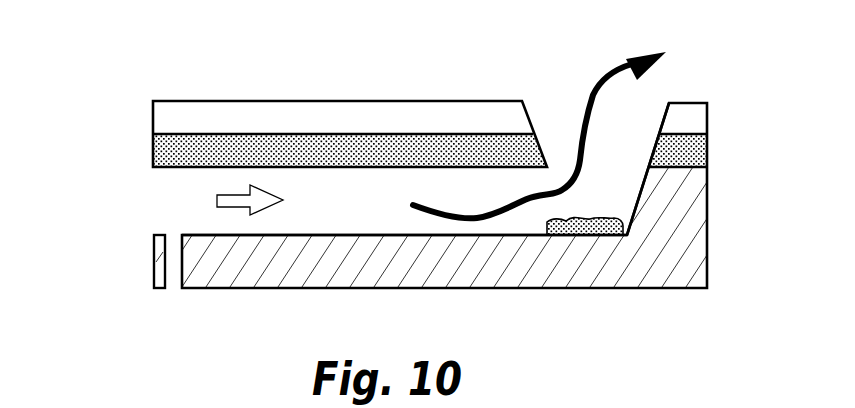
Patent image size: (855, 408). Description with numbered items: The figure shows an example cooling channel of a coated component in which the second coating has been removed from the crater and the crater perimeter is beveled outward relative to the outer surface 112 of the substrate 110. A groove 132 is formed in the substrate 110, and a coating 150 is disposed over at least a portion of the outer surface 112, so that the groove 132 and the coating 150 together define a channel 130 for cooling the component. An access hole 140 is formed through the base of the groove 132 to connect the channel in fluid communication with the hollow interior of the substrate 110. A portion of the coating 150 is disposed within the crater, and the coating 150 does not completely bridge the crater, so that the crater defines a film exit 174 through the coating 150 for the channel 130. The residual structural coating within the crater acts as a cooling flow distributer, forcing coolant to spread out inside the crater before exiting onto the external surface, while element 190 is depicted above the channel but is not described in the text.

The substrate 110 is at (680, 258).
The outer surface 112 is at (690, 173).
The channel 130 is at (330, 226).
The groove 132 is at (572, 105).
The access hole 140 is at (160, 260).
The coating 150 is at (153, 150).
The film exit 174 is at (650, 104).
The cover block 190 is at (472, 115).